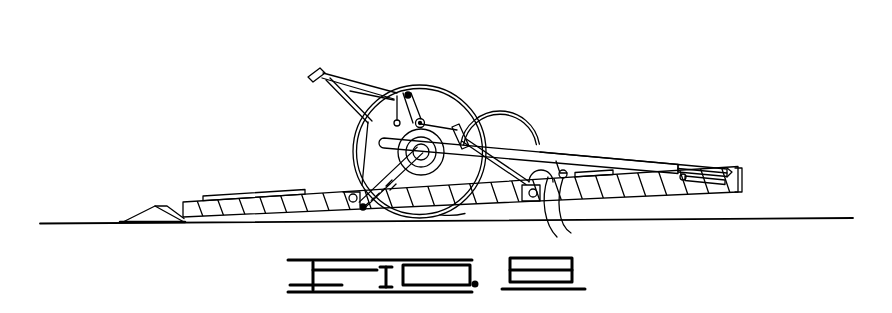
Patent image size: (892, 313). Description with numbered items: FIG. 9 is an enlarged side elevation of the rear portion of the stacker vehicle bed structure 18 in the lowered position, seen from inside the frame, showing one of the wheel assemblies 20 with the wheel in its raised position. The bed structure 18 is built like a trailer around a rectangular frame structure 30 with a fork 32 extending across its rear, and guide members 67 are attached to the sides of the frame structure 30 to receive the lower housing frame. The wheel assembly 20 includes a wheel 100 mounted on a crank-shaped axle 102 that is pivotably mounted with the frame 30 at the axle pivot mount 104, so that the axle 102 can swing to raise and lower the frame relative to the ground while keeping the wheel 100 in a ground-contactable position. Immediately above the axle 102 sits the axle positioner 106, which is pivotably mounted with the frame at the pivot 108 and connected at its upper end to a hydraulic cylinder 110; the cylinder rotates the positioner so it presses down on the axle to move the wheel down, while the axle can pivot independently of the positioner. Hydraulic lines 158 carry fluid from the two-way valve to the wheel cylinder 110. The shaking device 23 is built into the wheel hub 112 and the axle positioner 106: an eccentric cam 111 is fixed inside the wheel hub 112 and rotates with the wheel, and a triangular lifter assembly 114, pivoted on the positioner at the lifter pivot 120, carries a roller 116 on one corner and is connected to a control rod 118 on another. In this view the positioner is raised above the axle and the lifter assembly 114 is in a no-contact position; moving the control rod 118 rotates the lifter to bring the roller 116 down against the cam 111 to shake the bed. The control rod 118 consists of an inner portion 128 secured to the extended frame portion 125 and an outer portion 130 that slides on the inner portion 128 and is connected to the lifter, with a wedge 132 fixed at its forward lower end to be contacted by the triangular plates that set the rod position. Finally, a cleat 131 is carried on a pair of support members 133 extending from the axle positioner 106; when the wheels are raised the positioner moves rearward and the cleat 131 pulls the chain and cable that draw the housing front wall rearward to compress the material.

The stacker vehicle bed structure 18 is at (132, 178).
The wheel assembly 20 is at (472, 66).
The shaking device 23 is at (340, 125).
The rectangular frame structure 30 is at (245, 208).
The fork 32 is at (140, 217).
The guide member 67 is at (237, 190).
The wheel 100 is at (455, 97).
The axle 102 is at (388, 197).
The axle pivot mount 104 is at (362, 211).
The axle positioner 106 is at (365, 142).
The axle positioner pivot 108 is at (352, 194).
The hydraulic cylinder 110 is at (503, 158).
The eccentric cam 111 is at (470, 103).
The wheel hub 112 is at (453, 215).
The lifter assembly 114 is at (407, 91).
The roller 116 is at (421, 118).
The control rod 118 is at (558, 160).
The lifter pivot 120 is at (397, 94).
The extended frame portion 125 is at (733, 168).
The inner control rod portion 128 is at (695, 163).
The outer control rod portion 130 is at (607, 160).
The cleat 131 is at (311, 68).
The wedge 132 is at (680, 181).
The support member 133 is at (340, 97).
The hydraulic line 158 is at (561, 208).